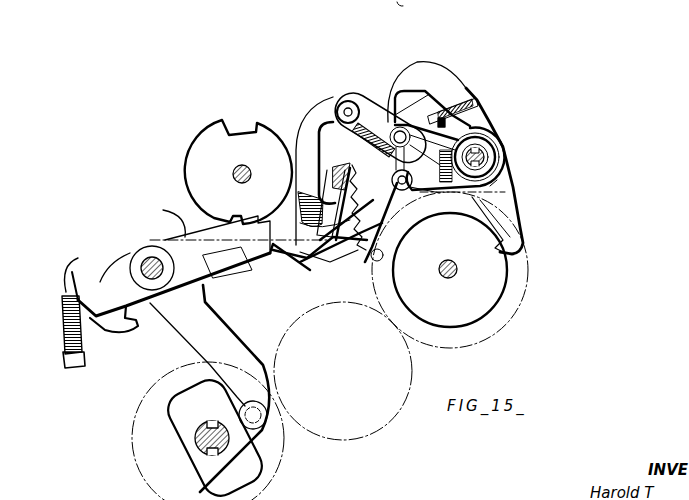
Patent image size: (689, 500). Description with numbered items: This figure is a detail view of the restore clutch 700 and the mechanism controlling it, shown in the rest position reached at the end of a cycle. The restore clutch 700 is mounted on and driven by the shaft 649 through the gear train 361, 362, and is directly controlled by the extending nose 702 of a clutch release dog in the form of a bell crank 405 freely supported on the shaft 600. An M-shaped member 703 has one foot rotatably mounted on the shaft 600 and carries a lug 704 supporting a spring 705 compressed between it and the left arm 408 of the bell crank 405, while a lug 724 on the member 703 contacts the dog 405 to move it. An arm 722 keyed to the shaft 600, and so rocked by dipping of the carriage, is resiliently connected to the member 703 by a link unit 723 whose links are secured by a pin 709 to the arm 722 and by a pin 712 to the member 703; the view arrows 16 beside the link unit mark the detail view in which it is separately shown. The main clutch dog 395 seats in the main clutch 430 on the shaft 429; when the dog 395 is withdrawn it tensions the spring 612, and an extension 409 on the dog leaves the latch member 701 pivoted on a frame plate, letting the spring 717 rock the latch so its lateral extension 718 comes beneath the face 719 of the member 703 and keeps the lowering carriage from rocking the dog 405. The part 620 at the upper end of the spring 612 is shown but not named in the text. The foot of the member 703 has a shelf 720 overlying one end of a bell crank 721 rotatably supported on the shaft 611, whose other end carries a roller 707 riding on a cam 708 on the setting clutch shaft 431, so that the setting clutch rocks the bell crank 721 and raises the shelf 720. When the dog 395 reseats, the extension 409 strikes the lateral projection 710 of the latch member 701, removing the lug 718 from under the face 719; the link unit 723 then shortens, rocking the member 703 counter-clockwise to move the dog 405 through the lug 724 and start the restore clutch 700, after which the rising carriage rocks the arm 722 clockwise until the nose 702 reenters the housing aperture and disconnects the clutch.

The direction arrow 16 is at (337, 98).
The gear train gear 361 is at (528, 288).
The gear train gear 362 is at (413, 366).
The main clutch dog 395 is at (182, 226).
The bell crank (clutch release dog) 405 is at (552, 181).
The left arm of bell crank 408 is at (300, 256).
The extension 409 is at (333, 264).
The shaft 429 is at (233, 174).
The main clutch 430 is at (198, 133).
The setting clutch shaft 431 is at (195, 437).
The shaft 600 is at (494, 143).
The shaft 611 is at (145, 262).
The spring 612 is at (62, 315).
The hook 620 is at (76, 262).
The shaft 649 is at (458, 270).
The restore clutch 700 is at (506, 258).
The latch member 701 is at (440, 110).
The nose 702 is at (523, 238).
The M-shaped member 703 is at (438, 62).
The lug 704 is at (505, 194).
The spring 705 is at (420, 196).
The roller 707 is at (268, 424).
The cam 708 is at (195, 450).
The pin 709 is at (398, 198).
The lateral projection 710 is at (305, 120).
The pin 712 is at (348, 100).
The spring 717 is at (332, 178).
The lateral extension (lug) 718 is at (417, 115).
The face 719 is at (367, 95).
The shelf 720 is at (303, 205).
The bell crank 721 is at (185, 340).
The arm 722 is at (472, 123).
The link unit 723 is at (360, 95).
The lug 724 is at (466, 106).